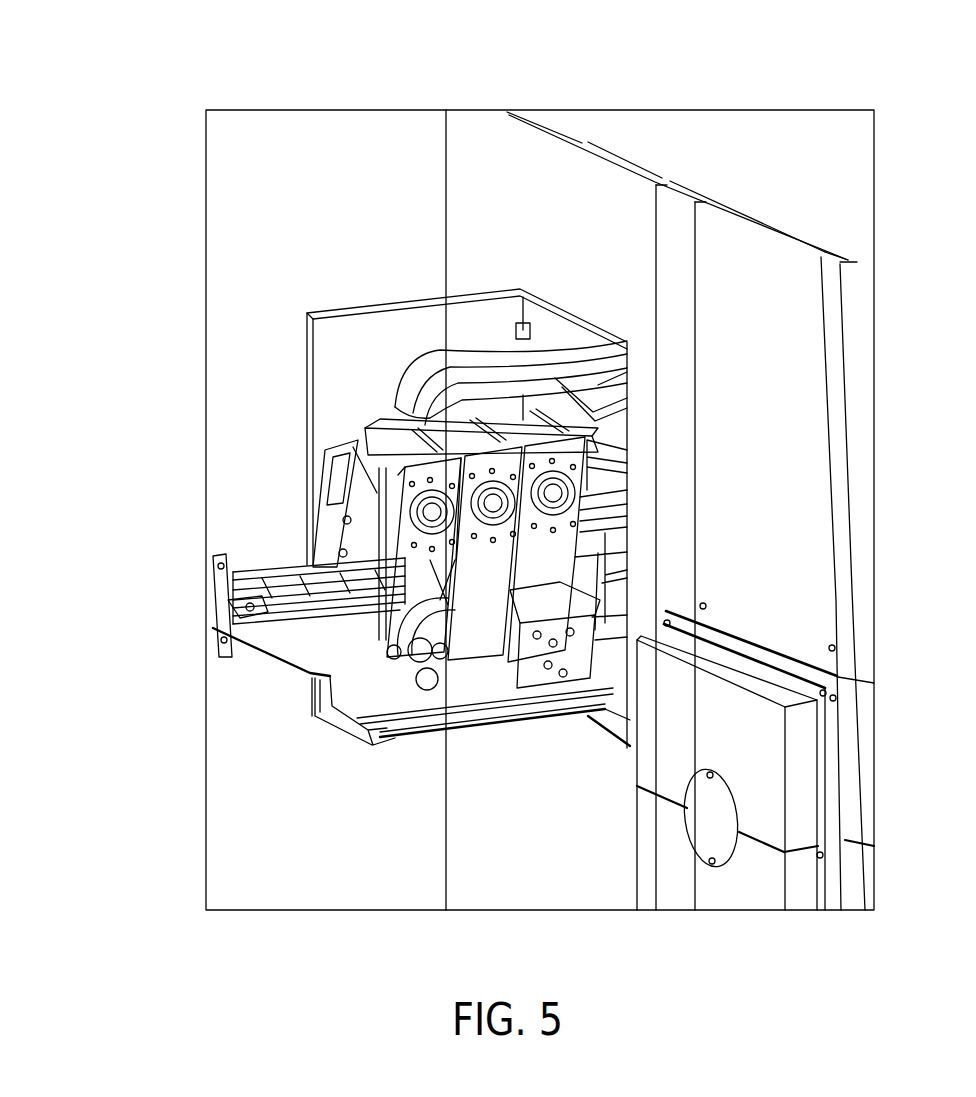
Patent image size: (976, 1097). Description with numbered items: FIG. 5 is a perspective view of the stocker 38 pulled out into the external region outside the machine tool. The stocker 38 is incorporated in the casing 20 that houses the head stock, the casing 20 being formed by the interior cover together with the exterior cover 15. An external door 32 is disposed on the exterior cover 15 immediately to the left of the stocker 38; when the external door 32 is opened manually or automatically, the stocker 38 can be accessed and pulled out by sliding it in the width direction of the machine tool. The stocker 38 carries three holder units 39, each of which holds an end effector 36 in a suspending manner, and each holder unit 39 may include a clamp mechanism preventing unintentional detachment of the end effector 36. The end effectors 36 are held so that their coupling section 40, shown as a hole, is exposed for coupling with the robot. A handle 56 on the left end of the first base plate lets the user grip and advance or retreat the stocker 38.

The exterior cover 15 is at (483, 862).
The casing 20 is at (652, 547).
The external door 32 is at (357, 323).
The end effector 36 is at (440, 637).
The stocker 38 is at (278, 730).
The holder unit 39 is at (430, 432).
The coupling section 40 is at (390, 583).
The handle 56 is at (216, 617).